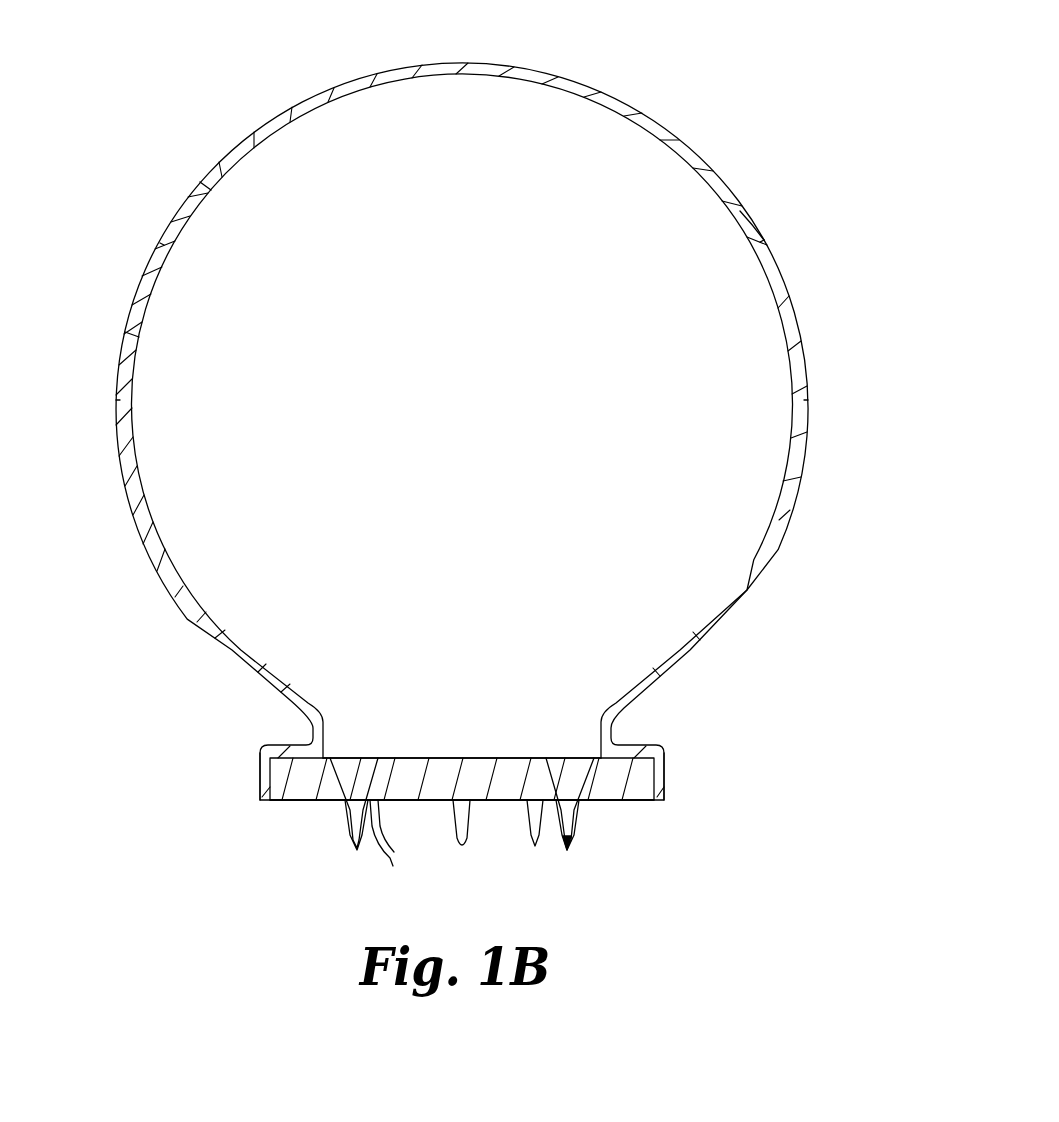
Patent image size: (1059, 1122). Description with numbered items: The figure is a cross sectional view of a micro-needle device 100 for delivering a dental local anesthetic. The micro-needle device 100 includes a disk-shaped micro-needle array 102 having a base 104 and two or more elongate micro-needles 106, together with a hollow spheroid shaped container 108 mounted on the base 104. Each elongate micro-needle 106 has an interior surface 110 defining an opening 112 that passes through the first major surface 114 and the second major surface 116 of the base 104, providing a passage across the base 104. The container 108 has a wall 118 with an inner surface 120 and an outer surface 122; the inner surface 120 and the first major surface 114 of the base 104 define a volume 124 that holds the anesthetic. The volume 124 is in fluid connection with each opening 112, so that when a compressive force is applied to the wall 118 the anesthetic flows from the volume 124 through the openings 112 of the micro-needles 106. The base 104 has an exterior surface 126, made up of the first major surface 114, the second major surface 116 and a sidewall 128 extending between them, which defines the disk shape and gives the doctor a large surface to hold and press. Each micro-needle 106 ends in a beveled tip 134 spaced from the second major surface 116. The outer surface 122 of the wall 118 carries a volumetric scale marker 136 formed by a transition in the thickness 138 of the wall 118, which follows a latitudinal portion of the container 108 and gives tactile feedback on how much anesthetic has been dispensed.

The micro-needle device 100 is at (710, 45).
The micro-needle array 102 is at (231, 748).
The base 104 is at (640, 776).
The elongate micro-needle 106 is at (354, 835).
The hollow spheroid shaped container 108 is at (669, 120).
The interior surface 110 is at (340, 757).
The opening 112 is at (568, 847).
The first major surface 114 is at (441, 757).
The second major surface 116 is at (630, 800).
The wall 118 is at (730, 188).
The inner surface 120 is at (140, 470).
The outer surface 122 is at (131, 513).
The volume 124 is at (444, 351).
The exterior surface 126 is at (666, 790).
The sidewall 128 is at (262, 788).
The tip 134 is at (393, 866).
The volumetric scale marker 136 is at (764, 240).
The thickness 138 is at (167, 152).